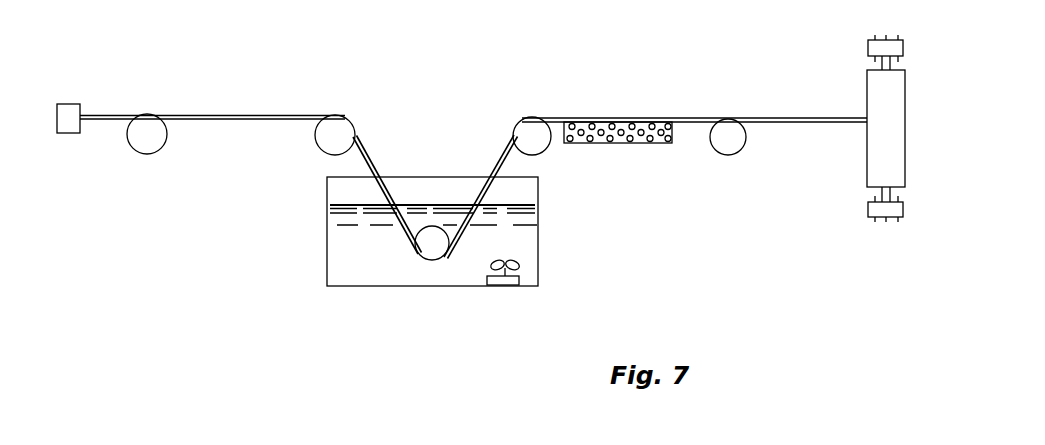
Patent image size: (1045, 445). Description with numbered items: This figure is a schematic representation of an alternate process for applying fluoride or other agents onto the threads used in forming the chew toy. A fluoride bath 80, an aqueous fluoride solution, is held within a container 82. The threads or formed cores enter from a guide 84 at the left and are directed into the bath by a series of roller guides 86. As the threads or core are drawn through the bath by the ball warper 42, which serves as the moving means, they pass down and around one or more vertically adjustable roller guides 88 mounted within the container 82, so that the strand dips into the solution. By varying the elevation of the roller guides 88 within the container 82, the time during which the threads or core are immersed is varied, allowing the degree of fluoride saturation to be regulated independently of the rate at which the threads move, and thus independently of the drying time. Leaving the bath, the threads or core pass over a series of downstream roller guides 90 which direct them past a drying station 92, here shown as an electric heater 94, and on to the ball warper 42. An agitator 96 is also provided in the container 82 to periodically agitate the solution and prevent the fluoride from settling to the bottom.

The ball warper 42 is at (882, 92).
The fluoride bath 80 is at (358, 220).
The container 82 is at (540, 255).
The guide 84 is at (80, 110).
The roller guides 86 is at (149, 140).
The vertically adjustable roller guides 88 is at (428, 247).
The downstream roller guides 90 is at (537, 147).
The drying station 92 is at (633, 145).
The electric heater 94 is at (672, 133).
The agitator 96 is at (520, 282).